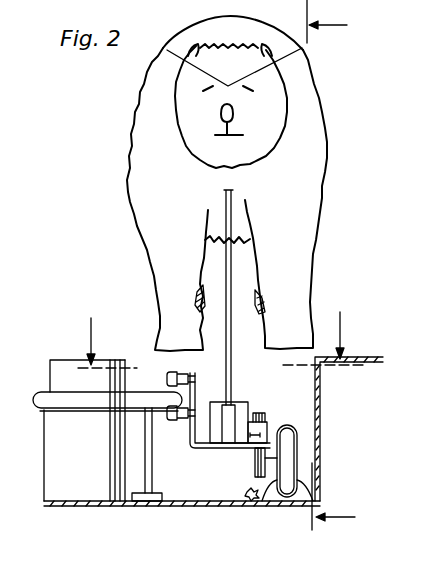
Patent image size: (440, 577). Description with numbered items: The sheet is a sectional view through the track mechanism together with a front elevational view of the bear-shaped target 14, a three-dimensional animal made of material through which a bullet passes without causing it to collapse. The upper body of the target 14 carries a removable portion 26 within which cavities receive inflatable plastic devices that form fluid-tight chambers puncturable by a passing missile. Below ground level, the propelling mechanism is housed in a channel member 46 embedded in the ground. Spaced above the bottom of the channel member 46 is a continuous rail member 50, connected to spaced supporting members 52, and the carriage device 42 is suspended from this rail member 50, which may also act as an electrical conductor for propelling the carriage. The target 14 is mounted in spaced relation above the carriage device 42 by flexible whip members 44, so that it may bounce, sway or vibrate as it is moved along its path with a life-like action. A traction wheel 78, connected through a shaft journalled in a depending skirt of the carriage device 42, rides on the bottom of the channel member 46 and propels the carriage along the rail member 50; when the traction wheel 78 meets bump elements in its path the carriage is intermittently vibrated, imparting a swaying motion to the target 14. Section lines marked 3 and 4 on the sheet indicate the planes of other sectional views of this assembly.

The target figure 14 is at (331, 146).
The removable portion 26 is at (265, 33).
The flexible whip members 44 is at (256, 297).
The channel member 46 is at (321, 425).
The rail member 50 is at (52, 392).
The supporting members 52 is at (152, 473).
The carriage device 42 is at (209, 448).
The traction wheel 78 is at (286, 428).
The section line 3- 3 is at (338, 265).
The section line 4- 4 is at (221, 330).